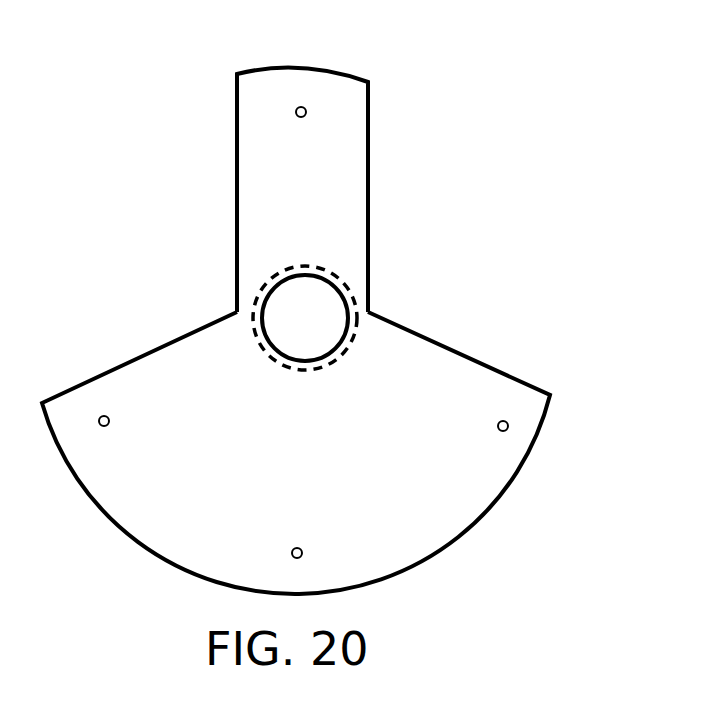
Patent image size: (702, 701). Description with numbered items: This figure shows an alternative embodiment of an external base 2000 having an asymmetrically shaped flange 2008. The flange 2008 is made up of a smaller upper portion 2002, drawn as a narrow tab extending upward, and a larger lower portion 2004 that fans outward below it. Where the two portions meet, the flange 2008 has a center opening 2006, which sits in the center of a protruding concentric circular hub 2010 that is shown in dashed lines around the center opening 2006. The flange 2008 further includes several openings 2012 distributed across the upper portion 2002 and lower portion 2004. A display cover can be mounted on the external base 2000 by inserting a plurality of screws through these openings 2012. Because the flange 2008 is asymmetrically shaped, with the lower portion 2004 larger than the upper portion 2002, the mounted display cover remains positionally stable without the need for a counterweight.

The external base 2000 is at (336, 331).
The upper portion 2002 is at (275, 237).
The lower portion 2004 is at (408, 392).
The center opening 2006 is at (315, 318).
The flange 2008 is at (337, 474).
The protruding concentric circular hub 2010 is at (250, 336).
The openings 2012 is at (508, 430).